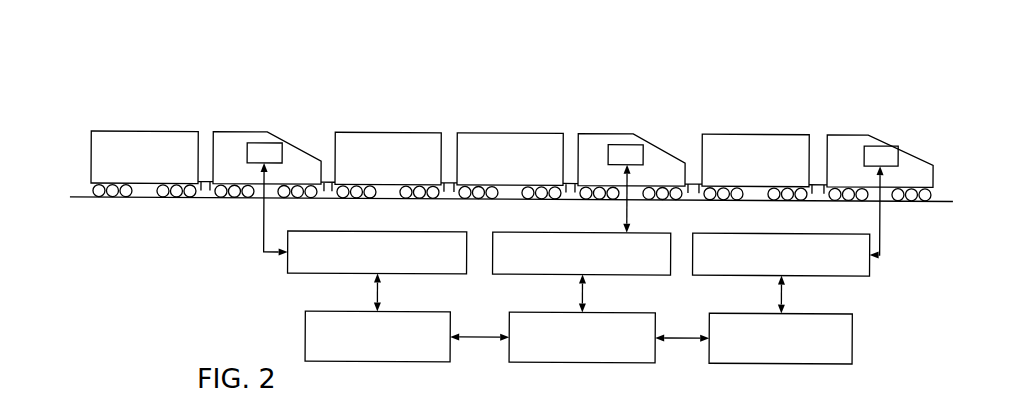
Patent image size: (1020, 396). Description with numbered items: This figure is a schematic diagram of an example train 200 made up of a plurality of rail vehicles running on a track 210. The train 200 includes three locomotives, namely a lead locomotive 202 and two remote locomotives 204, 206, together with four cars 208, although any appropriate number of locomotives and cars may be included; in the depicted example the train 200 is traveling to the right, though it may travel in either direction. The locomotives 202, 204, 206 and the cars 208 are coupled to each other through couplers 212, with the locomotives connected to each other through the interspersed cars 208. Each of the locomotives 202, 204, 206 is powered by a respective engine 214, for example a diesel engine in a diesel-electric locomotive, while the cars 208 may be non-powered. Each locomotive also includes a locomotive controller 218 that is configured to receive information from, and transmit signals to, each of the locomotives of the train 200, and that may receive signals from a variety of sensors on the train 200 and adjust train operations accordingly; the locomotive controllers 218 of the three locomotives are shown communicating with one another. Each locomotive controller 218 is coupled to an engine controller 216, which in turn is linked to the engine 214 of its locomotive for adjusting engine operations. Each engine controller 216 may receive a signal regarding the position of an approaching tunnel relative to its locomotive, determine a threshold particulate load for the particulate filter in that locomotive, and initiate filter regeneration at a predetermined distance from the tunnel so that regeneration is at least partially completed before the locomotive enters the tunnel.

The train 200 is at (769, 80).
The lead locomotive 202 is at (869, 131).
The remote locomotive 204 is at (606, 131).
The remote locomotive 206 is at (247, 131).
The car 208 is at (143, 131).
The track 210 is at (915, 198).
The coupler 212 is at (205, 190).
The engine 214 is at (572, 154).
The engine controller 216 is at (579, 253).
The locomotive controller 218 is at (578, 337).